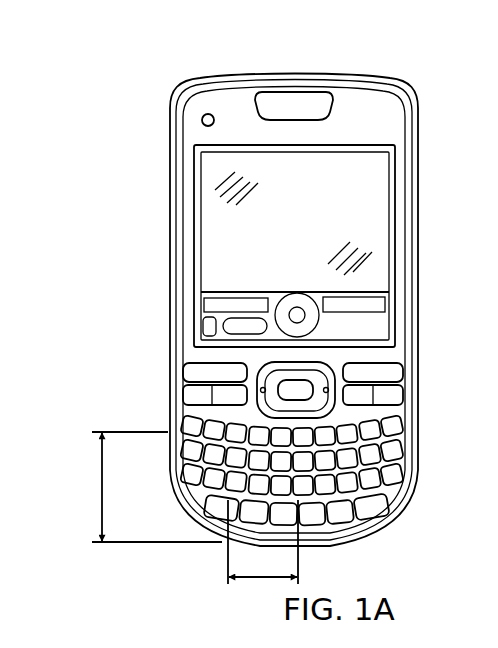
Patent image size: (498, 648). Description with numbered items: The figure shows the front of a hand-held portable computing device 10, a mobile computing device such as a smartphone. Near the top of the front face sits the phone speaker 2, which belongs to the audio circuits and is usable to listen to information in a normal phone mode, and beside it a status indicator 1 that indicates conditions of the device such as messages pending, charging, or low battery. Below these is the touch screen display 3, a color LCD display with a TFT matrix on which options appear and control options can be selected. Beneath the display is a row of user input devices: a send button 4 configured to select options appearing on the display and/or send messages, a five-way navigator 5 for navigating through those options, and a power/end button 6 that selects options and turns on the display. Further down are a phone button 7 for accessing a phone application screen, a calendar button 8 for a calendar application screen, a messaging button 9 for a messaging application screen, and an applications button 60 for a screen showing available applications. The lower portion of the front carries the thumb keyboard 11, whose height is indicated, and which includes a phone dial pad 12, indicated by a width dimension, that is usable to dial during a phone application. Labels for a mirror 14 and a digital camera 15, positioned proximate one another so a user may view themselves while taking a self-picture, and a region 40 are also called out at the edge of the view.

The status indicator 1 is at (200, 113).
The phone speaker 2 is at (297, 92).
The touch screen display 3 is at (288, 226).
The send button 4 is at (212, 358).
The 5-way navigator 5 is at (320, 376).
The power/end button 6 is at (382, 356).
The phone button 7 is at (200, 400).
The calendar button 8 is at (294, 470).
The messaging button 9 is at (352, 414).
The hand-held portable computing device 10 is at (134, 291).
The thumb keyboard 11 is at (101, 489).
The phone dial pad 12 is at (262, 582).
The mirror 14 is at (497, 190).
The digital camera 15 is at (497, 283).
The detail region 40 is at (497, 530).
The applications button 60 is at (408, 403).